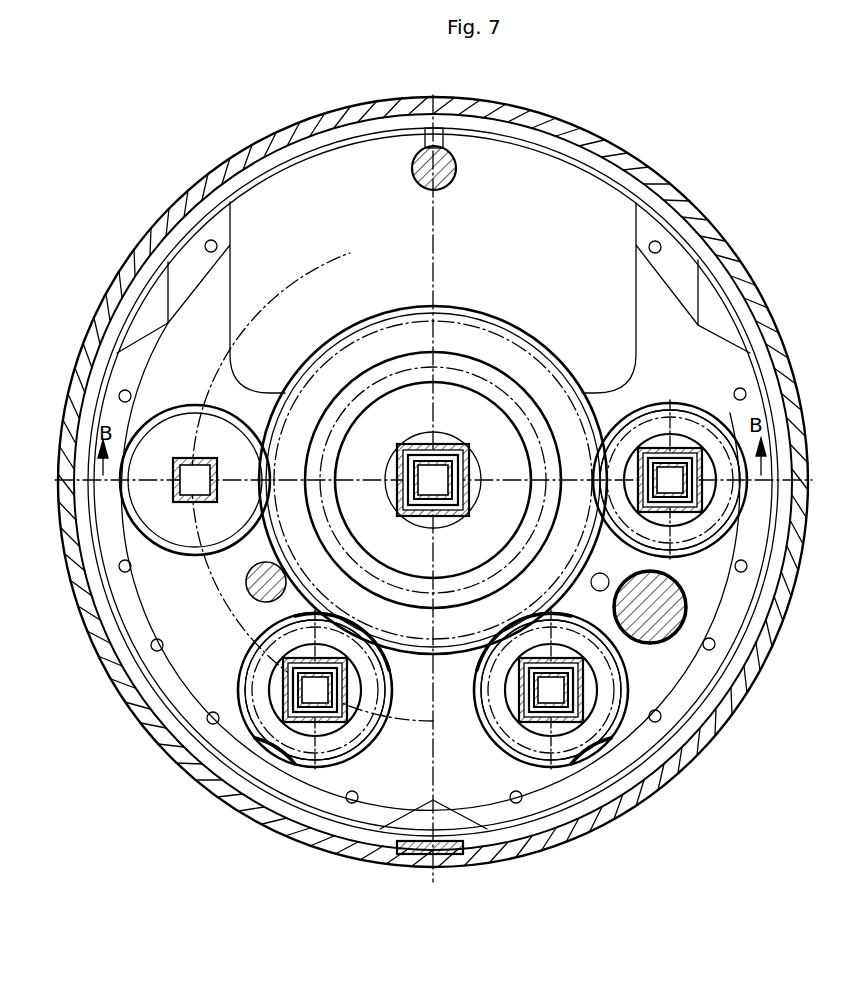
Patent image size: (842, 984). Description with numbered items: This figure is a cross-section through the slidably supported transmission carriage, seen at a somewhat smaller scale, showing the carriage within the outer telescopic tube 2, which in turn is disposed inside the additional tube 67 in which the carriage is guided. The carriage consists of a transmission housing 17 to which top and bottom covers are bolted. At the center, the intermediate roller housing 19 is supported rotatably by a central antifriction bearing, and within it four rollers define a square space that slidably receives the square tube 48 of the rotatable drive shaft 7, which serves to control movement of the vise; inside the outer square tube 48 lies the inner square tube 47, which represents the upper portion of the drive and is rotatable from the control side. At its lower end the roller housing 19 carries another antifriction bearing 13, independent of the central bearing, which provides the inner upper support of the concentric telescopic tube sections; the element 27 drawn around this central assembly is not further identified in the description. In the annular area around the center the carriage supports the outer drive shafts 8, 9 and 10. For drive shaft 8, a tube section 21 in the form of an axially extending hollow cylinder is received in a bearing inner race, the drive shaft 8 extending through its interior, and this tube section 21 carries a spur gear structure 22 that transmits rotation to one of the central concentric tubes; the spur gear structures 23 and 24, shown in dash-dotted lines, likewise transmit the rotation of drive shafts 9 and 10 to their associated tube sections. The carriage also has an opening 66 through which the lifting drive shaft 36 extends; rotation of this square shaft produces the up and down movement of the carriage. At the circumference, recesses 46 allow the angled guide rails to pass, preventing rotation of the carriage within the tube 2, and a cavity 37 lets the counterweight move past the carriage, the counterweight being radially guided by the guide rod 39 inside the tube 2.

The outer telescopic tube 2 is at (566, 150).
The rotatable drive shaft 7 is at (400, 497).
The outer drive shaft 8 is at (688, 536).
The outer drive shaft 9 is at (620, 700).
The outer drive shaft 10 is at (262, 678).
The antifriction bearing 13 is at (420, 600).
The transmission housing 17 is at (671, 324).
The intermediate roller housing 19 is at (512, 469).
The tube section 21 is at (663, 448).
The spur gear structure 22 is at (697, 408).
The spur gear structure 23 is at (495, 746).
The spur gear structure 24 is at (360, 744).
The gear (with gears 26, 25) 27 is at (313, 370).
The lifting drive shaft 36 is at (190, 504).
The cavity 37 is at (561, 278).
The guide rod 39 is at (456, 183).
The recess 46 is at (170, 324).
The inner square tube 47 is at (396, 474).
The square tube 48 is at (420, 446).
The opening 66 is at (182, 448).
The tube 67 is at (288, 135).